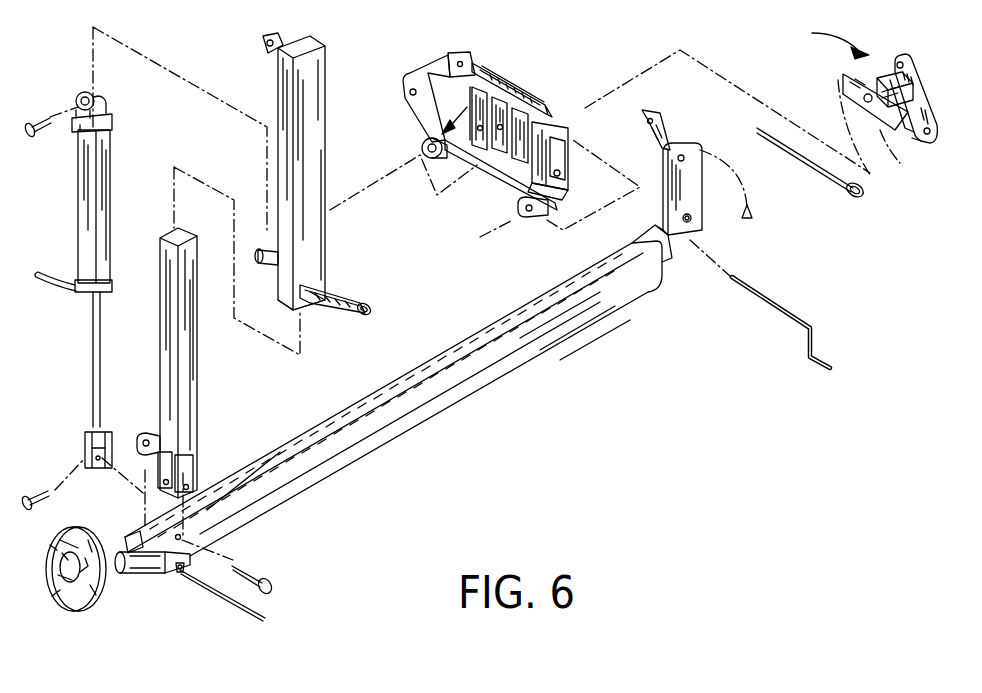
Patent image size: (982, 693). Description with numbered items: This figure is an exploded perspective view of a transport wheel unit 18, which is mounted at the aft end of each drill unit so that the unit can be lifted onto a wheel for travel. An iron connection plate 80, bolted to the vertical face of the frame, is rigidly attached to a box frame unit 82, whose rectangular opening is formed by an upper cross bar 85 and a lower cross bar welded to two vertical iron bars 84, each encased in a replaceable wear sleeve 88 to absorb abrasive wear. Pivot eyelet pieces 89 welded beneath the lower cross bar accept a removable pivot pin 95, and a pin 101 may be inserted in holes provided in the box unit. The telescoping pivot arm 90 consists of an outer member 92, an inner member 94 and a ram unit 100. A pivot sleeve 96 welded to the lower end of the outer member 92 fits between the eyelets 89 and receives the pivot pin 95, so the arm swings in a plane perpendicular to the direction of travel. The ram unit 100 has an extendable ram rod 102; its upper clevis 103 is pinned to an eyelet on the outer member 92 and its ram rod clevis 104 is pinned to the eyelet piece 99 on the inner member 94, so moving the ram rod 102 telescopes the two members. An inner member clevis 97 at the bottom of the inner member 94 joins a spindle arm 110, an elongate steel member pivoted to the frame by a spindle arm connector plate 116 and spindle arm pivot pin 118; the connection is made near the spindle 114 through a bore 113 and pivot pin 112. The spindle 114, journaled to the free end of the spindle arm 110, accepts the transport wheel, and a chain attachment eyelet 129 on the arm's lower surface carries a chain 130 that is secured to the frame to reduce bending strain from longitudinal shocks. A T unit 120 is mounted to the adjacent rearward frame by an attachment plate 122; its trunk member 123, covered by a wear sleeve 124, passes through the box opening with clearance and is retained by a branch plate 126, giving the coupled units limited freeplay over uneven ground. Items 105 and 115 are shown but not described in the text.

The transport wheel unit 18 is at (602, 410).
The connection plate 80 is at (428, 70).
The box frame unit 82 is at (545, 78).
The vertical iron bar 84 is at (476, 128).
The upper cross bar 85 is at (552, 107).
The wear sleeve 88 is at (473, 95).
The pivot eyelet piece 89 is at (415, 125).
The telescoping pivot arm 90 is at (173, 93).
The outer member 92 is at (278, 175).
The inner member 94 is at (185, 358).
The pivot pin 95 is at (858, 195).
The pivot sleeve 96 is at (368, 312).
The inner member clevis 97 is at (243, 473).
The eyelet piece 99 is at (147, 433).
The ram unit 100 is at (110, 193).
The pin 101 is at (782, 313).
The ram rod 102 is at (102, 330).
The upper clevis 103 is at (85, 92).
The ram rod clevis 104 is at (85, 448).
The pin 105 is at (43, 133).
The spindle arm 110 is at (408, 428).
The pivot pin 112 is at (247, 571).
The bore 113 is at (182, 535).
The spindle 114 is at (105, 580).
The hub plate 115 is at (73, 612).
The spindle arm connector plate 116 is at (693, 203).
The spindle arm pivot pin 118 is at (693, 220).
The T unit 120 is at (792, 38).
The attachment plate 122 is at (917, 67).
The trunk member 123 is at (847, 67).
The wear sleeve 124 is at (858, 64).
The branch plate 126 is at (890, 123).
The chain attachment eyelet 129 is at (180, 574).
The chain 130 is at (266, 616).